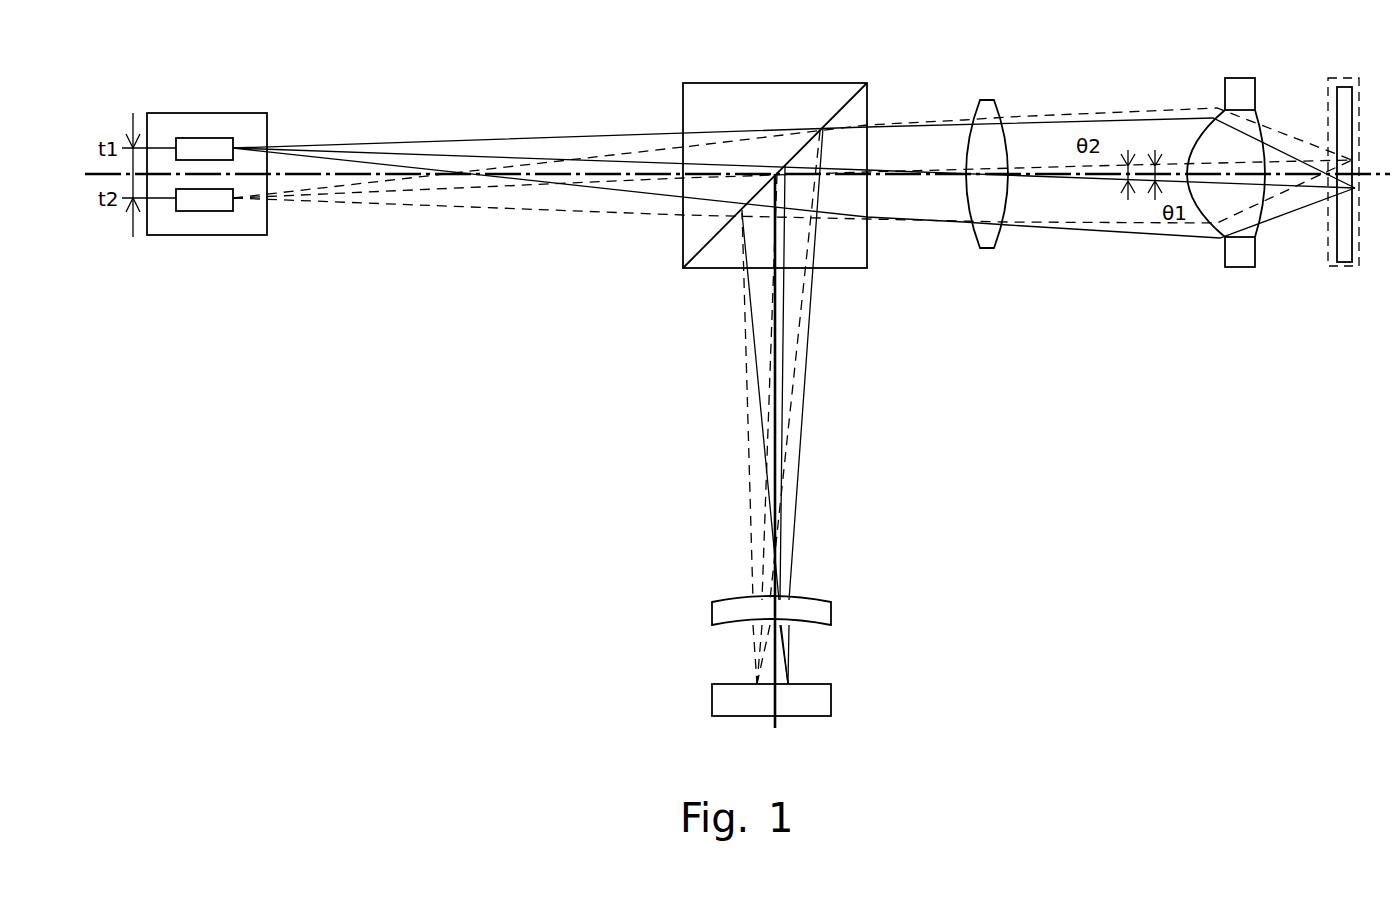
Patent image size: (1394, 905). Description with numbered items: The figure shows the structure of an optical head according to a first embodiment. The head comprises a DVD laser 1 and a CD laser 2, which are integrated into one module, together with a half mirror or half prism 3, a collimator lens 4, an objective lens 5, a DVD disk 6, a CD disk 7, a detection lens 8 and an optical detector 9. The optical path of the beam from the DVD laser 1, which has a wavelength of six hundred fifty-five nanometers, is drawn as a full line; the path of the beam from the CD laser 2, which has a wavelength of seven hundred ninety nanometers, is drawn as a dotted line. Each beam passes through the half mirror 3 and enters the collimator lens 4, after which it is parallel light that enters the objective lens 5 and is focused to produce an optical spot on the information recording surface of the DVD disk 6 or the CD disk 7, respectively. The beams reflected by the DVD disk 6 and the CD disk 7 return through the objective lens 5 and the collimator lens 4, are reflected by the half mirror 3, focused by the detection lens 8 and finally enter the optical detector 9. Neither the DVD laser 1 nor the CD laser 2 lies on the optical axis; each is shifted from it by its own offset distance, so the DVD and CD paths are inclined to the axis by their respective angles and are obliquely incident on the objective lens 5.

The DVD laser 1 is at (208, 150).
The CD laser 2 is at (208, 204).
The half mirror 3 is at (712, 258).
The collimator lens 4 is at (987, 243).
The objective lens 5 is at (1238, 255).
The DVD disk 6 is at (1344, 88).
The CD disk 7 is at (1338, 268).
The detection lens 8 is at (722, 610).
The optical detector 9 is at (722, 698).